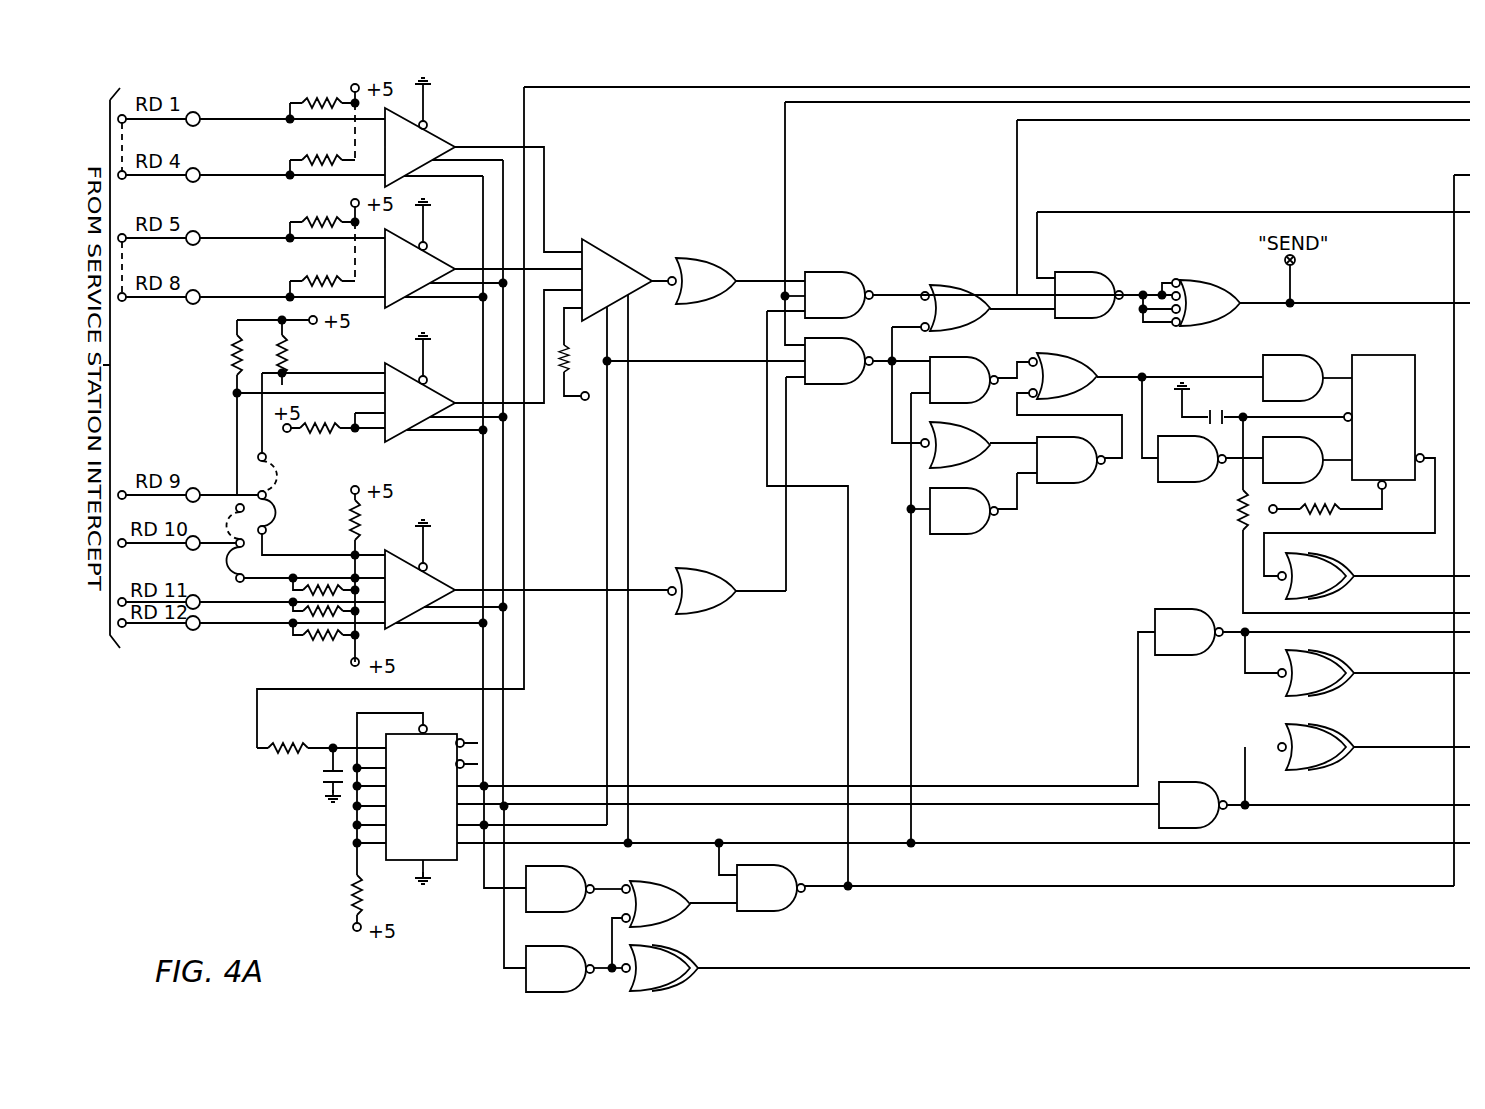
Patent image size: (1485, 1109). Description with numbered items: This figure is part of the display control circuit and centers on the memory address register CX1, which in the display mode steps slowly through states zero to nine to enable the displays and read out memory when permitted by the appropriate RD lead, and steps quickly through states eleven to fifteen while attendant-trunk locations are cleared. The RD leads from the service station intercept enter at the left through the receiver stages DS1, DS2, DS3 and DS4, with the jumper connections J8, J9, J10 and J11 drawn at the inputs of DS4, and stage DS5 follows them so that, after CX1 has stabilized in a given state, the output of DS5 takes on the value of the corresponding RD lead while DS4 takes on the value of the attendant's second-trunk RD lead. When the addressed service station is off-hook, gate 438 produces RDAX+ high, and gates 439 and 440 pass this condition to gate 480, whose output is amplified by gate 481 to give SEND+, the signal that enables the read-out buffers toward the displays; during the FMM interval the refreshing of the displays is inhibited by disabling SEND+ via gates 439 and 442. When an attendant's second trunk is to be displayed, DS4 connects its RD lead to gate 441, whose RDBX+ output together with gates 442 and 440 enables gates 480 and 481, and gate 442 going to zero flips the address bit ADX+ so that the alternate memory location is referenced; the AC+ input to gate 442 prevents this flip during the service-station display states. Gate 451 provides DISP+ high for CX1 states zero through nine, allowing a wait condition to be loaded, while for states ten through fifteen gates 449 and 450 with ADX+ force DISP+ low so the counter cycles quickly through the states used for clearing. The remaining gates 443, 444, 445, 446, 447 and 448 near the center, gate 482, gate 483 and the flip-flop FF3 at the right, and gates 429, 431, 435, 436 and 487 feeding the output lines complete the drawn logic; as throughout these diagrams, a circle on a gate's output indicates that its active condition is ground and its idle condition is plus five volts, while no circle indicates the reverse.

The logic gate 438 is at (402, 152).
The logic gate 439 is at (974, 295).
The logic gate 440 is at (964, 308).
The logic gate 441 is at (727, 591).
The logic gate 442 is at (867, 361).
The gate G443 443 is at (979, 445).
The gate G444 444 is at (954, 511).
The gate G445 445 is at (1071, 460).
The gate G446 446 is at (979, 380).
The gate G447 447 is at (1146, 376).
The gate G448 448 is at (574, 889).
The logic gate 449 is at (574, 969).
The logic gate 450 is at (679, 904).
The logic gate 451 is at (1095, 888).
The logic gate 480 is at (1108, 295).
The logic gate 481 is at (1321, 302).
The gate G482 482 is at (1210, 459).
The gate G483 483 is at (1374, 576).
The gate G429 429 is at (1312, 632).
The gate G431 431 is at (1314, 805).
The gate G435 435 is at (1374, 673).
The gate G436 436 is at (1374, 747).
The gate G487 487 is at (1046, 968).
The line receiver DS1 is at (420, 132).
The line receiver DS2 is at (420, 253).
The line receiver DS3 is at (420, 387).
The data selector DS4 is at (420, 574).
The data selector DS5 is at (617, 280).
The flip-flop FF3 is at (1384, 422).
The memory address register CX1 is at (415, 822).
The jumper J8 is at (279, 476).
The jumper J9 is at (279, 516).
The jumper J10 is at (214, 523).
The jumper J11 is at (215, 564).